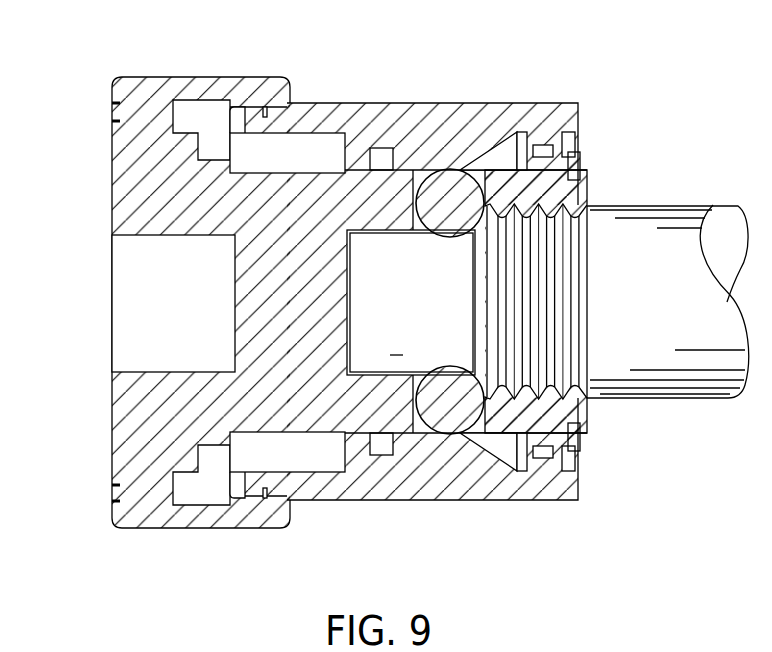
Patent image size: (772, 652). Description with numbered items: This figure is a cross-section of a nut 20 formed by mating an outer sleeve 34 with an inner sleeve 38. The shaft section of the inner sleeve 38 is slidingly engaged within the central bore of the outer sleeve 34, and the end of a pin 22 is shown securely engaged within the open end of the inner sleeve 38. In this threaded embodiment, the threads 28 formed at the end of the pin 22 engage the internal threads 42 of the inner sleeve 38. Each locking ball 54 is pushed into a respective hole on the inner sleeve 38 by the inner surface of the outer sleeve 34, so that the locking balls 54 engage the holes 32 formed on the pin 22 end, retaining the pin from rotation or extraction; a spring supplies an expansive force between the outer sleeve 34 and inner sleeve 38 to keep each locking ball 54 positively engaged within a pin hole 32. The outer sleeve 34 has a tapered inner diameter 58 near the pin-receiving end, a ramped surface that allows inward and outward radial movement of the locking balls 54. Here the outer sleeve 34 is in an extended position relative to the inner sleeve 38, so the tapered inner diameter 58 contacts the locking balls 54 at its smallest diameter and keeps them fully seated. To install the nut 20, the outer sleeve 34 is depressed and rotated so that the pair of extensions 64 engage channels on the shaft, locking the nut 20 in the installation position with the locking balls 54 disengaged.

The nut 20 is at (468, 60).
The pin 22 is at (412, 316).
The threads 28 is at (577, 370).
The holes 32 is at (457, 435).
The outer sleeve 34 is at (397, 110).
The inner sleeve 38 is at (120, 160).
The internal threads 42 is at (587, 182).
The locking ball 54 is at (452, 368).
The tapered inner diameter 58 is at (493, 157).
The extensions 64 is at (347, 160).